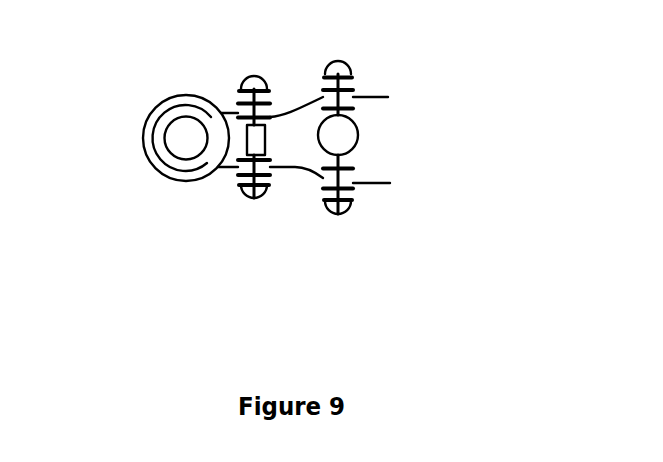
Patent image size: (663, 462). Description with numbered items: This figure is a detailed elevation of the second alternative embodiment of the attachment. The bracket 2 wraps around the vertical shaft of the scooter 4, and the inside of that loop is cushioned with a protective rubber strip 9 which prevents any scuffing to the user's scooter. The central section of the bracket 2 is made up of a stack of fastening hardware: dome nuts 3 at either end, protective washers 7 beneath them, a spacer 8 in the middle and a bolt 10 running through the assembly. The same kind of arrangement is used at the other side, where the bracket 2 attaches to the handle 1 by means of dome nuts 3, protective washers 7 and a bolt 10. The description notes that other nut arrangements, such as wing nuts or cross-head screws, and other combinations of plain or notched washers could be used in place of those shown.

The handle 1 is at (360, 138).
The bracket 2 is at (146, 112).
The dome nuts 3 is at (247, 78).
The scooter 4 is at (172, 167).
The protective washers 7 is at (271, 91).
The spacer 8 is at (265, 140).
The protective rubber strip 9 is at (192, 173).
The bolt 10 is at (237, 186).